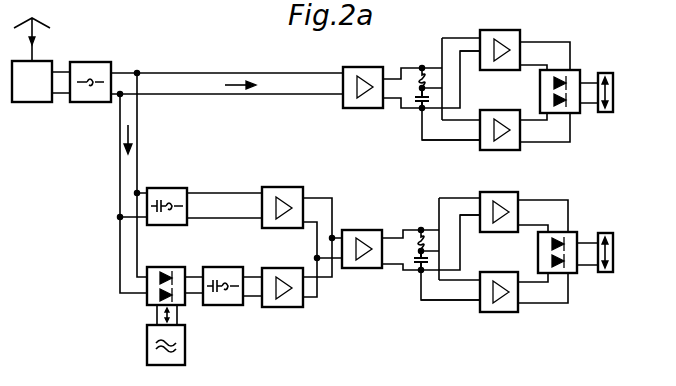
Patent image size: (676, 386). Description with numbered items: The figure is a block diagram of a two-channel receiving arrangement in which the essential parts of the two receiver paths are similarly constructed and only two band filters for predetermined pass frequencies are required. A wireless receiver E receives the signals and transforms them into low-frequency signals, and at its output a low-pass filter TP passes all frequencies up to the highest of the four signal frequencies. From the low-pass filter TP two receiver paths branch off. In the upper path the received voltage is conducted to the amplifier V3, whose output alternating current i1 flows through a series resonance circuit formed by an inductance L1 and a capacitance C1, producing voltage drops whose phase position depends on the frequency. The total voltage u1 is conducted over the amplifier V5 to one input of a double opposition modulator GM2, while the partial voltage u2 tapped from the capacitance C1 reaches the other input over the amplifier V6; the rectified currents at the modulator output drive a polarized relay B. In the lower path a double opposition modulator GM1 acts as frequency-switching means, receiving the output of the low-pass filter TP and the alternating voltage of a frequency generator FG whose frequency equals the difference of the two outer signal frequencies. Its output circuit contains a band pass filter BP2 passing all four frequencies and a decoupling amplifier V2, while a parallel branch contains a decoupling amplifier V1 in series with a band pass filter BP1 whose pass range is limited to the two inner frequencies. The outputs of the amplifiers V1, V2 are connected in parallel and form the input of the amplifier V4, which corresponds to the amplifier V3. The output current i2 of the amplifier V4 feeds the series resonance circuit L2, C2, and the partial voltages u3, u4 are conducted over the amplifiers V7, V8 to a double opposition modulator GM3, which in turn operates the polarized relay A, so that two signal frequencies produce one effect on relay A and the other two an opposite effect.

The wireless receiver E is at (32, 60).
The low-pass filter TP is at (81, 82).
The band pass filter BP1 is at (167, 206).
The band pass filter BP2 is at (223, 287).
The double opposition modulator GM1 is at (166, 277).
The double opposition modulator GM2 is at (547, 91).
The double opposition modulator GM3 is at (544, 252).
The frequency generator FG is at (168, 345).
The amplifier V1 is at (282, 198).
The amplifier V2 is at (282, 278).
The amplifier V3 is at (363, 78).
The amplifier V4 is at (362, 240).
The amplifier V5 is at (500, 41).
The amplifier V6 is at (500, 121).
The amplifier V7 is at (499, 203).
The amplifier V8 is at (499, 283).
The inductance L1 is at (422, 69).
The capacitance C1 is at (416, 97).
The inductance L2 is at (420, 232).
The capacitance C2 is at (416, 269).
The alternating current i1 is at (395, 88).
The output current i2 is at (395, 251).
The total voltage u1 is at (470, 45).
The partial voltage u2 is at (451, 129).
The partial voltage u3 is at (469, 207).
The partial voltage u4 is at (450, 290).
The polarized relay A is at (611, 252).
The polarized relay B is at (611, 92).